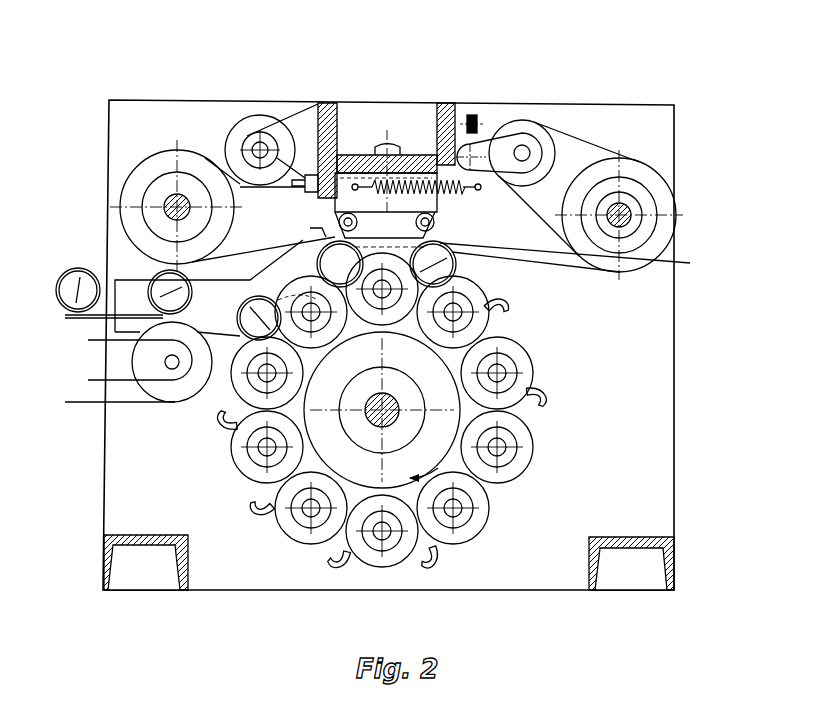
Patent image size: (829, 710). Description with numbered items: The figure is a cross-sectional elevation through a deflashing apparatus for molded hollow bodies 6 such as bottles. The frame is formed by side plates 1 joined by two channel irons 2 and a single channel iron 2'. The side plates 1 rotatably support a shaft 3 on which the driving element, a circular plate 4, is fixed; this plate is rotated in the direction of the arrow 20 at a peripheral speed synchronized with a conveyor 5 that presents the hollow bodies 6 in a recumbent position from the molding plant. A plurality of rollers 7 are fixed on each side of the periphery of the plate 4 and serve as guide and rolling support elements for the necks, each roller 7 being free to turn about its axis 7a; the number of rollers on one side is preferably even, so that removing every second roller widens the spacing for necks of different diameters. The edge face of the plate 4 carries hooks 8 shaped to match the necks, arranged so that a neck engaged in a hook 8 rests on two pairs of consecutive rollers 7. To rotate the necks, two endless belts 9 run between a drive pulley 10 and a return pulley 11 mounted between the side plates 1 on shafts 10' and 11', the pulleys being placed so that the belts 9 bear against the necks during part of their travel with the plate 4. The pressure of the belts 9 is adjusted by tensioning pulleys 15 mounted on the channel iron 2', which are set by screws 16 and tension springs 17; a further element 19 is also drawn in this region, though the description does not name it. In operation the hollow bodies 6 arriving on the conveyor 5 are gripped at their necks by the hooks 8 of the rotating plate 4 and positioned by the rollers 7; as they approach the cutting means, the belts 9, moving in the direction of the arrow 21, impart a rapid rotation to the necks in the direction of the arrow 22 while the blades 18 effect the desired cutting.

The side plates 1 is at (660, 452).
The channel irons 2 is at (390, 562).
The channel iron 2' is at (388, 142).
The shaft 3 is at (382, 412).
The circular plate 4 is at (452, 357).
The conveyor 5 is at (97, 318).
The hollow bodies 6 is at (73, 282).
The rollers 7 is at (520, 387).
The axis 7a is at (498, 377).
The hooks 8 is at (318, 256).
The endless belts 9 is at (563, 178).
The drive pulley 10 is at (207, 154).
The shaft 10' is at (127, 190).
The return pulley 11 is at (619, 157).
The shaft 11' is at (663, 198).
The tensioning pulleys 15 is at (522, 128).
The screws 16 is at (313, 177).
The tension springs 17 is at (410, 178).
The blades 18 is at (398, 228).
The tension spring 19 is at (368, 180).
The arrow 20 is at (421, 462).
The arrow 21 is at (480, 238).
The arrow 22 is at (340, 264).